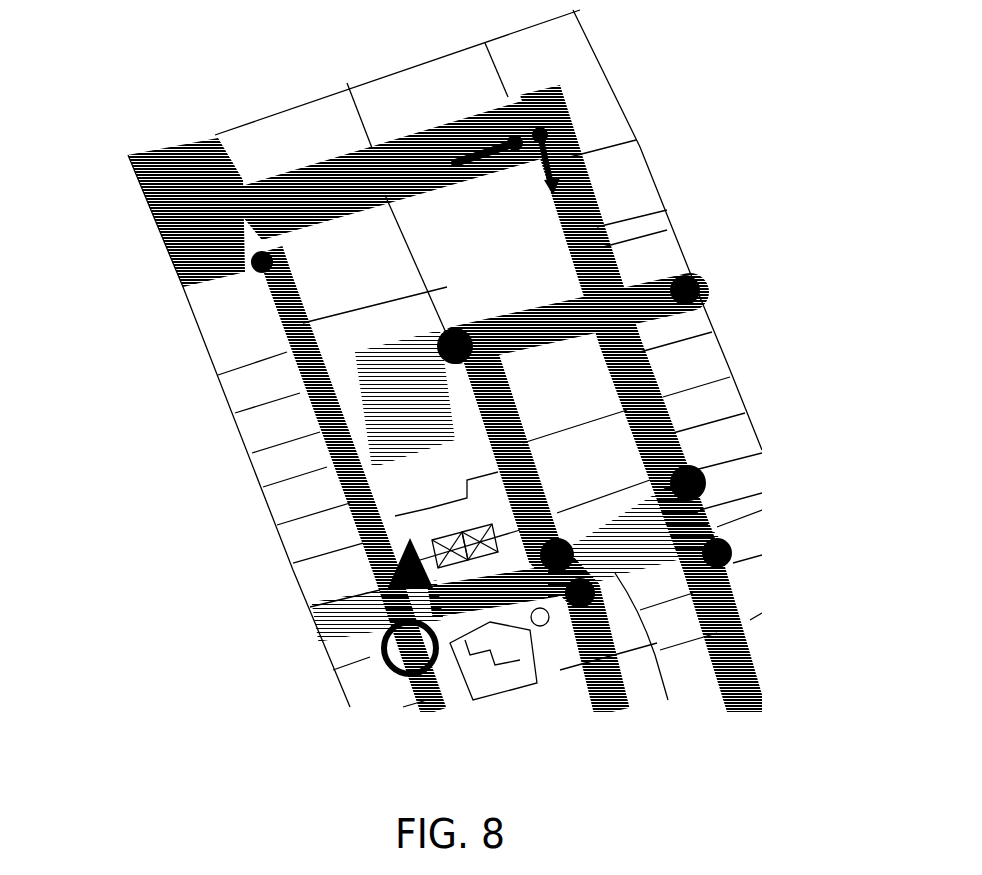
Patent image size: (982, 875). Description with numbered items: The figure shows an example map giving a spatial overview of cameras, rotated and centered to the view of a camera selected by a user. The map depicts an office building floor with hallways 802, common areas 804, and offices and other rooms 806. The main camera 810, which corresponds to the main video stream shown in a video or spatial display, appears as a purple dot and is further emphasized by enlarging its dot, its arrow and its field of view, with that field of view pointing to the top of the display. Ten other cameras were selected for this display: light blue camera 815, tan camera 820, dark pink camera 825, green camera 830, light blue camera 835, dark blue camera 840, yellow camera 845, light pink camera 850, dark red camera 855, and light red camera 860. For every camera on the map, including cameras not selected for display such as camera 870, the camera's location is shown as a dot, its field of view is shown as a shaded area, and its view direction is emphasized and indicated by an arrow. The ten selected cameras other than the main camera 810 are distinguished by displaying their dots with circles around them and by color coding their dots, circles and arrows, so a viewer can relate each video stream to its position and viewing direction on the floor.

The hallways 802 is at (320, 423).
The common areas 804 is at (395, 563).
The offices and other rooms 806 is at (300, 492).
The main camera 810 is at (390, 677).
The light blue camera 815 is at (320, 633).
The tan camera 820 is at (543, 627).
The dark pink camera 825 is at (596, 705).
The green camera 830 is at (612, 575).
The light blue camera 835 is at (730, 552).
The dark blue camera 840 is at (702, 476).
The yellow camera 845 is at (695, 278).
The light pink camera 850 is at (457, 335).
The dark red camera 855 is at (258, 246).
The light red camera 860 is at (140, 174).
The camera 870 is at (548, 128).